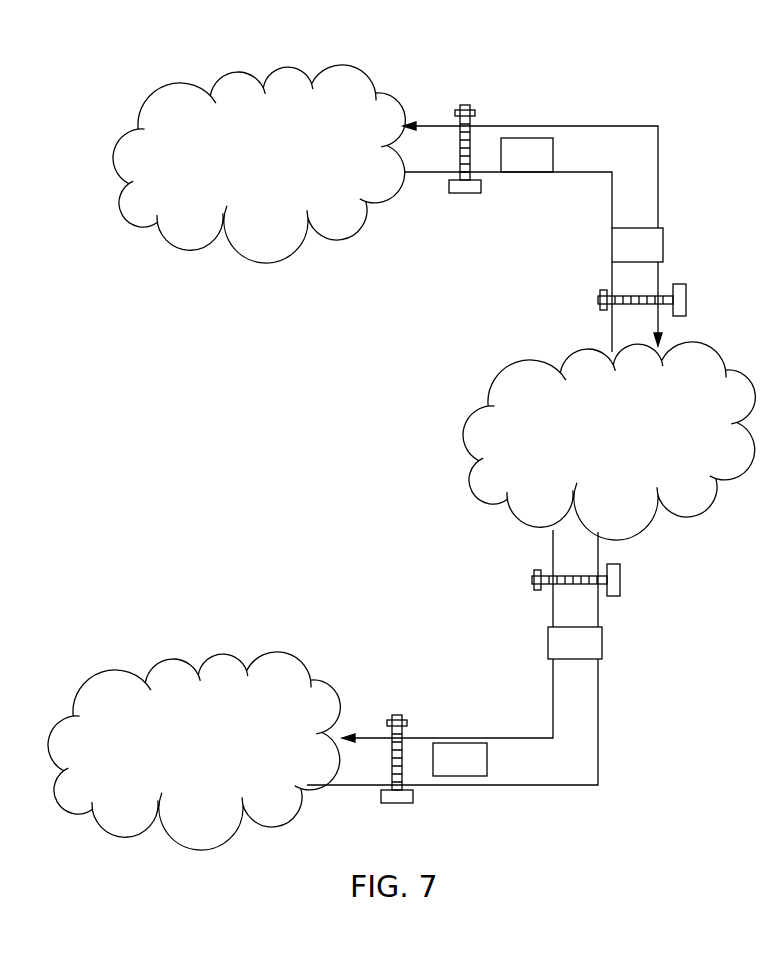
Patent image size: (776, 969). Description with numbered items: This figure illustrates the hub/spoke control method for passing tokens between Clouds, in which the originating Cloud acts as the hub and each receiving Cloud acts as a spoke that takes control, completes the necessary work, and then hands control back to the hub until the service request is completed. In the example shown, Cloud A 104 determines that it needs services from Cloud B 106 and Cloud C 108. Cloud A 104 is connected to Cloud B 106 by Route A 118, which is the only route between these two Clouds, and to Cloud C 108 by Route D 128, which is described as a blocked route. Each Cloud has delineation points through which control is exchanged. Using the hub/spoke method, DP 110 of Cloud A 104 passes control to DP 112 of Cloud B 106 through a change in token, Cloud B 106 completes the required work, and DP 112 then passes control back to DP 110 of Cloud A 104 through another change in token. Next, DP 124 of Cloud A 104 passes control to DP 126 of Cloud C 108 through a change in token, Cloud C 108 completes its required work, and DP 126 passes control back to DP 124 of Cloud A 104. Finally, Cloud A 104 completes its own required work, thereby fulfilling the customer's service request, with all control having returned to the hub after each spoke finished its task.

The Cloud A 104 is at (730, 368).
The Cloud B 106 is at (186, 86).
The Cloud C 108 is at (118, 668).
The delineation point 110 is at (664, 245).
The delineation point 112 is at (527, 172).
The Route A 118 is at (652, 165).
The delineation point 124 is at (603, 643).
The delineation point 126 is at (458, 743).
The Route D 128 is at (587, 742).